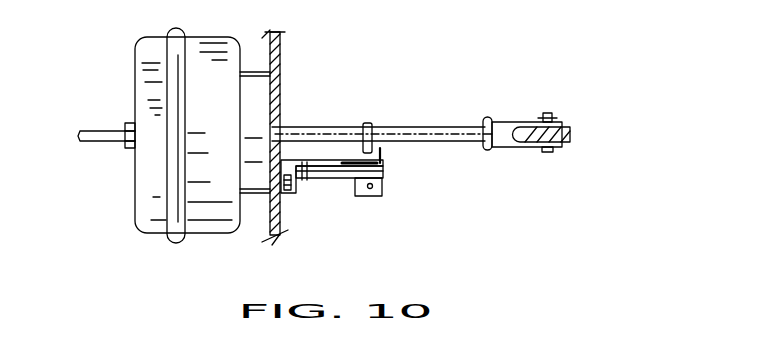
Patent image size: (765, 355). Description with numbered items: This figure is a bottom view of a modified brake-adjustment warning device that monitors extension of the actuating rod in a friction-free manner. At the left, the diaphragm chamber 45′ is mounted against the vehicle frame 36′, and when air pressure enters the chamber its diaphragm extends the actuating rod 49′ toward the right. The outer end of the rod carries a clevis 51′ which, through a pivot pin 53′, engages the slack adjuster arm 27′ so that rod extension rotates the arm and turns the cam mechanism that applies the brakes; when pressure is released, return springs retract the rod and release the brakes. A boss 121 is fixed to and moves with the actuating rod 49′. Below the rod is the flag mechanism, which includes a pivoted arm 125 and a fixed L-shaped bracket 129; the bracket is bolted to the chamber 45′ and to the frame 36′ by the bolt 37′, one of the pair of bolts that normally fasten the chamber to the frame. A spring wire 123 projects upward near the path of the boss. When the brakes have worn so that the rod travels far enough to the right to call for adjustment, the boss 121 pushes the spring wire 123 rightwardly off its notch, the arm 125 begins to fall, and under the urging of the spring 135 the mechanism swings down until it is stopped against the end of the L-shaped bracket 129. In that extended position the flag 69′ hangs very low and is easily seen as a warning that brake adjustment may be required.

The diaphragm chamber 45′ is at (146, 215).
The frame 36′ is at (279, 54).
The actuating rod 49′ is at (437, 131).
The boss 121 is at (367, 148).
The spring wire 123 is at (381, 152).
The L-shaped bracket 129 is at (292, 162).
The spring 135 is at (345, 162).
The arm 125 is at (337, 177).
The flag 69′ is at (381, 188).
The bolt 37′ is at (291, 181).
The clevis 51′ is at (505, 140).
The slack adjuster arm 27′ is at (570, 133).
The pivot pin 53′ is at (547, 115).